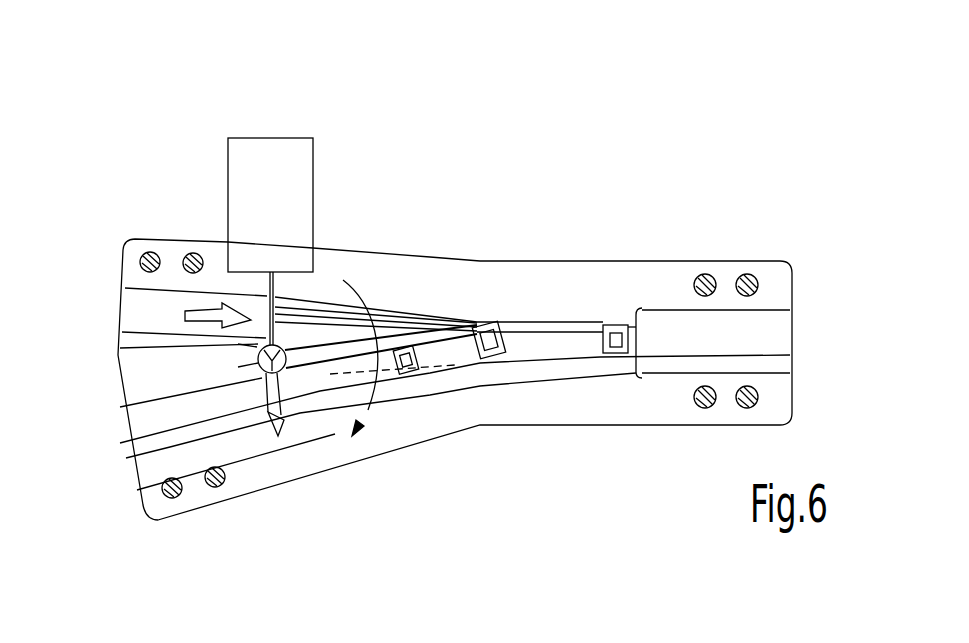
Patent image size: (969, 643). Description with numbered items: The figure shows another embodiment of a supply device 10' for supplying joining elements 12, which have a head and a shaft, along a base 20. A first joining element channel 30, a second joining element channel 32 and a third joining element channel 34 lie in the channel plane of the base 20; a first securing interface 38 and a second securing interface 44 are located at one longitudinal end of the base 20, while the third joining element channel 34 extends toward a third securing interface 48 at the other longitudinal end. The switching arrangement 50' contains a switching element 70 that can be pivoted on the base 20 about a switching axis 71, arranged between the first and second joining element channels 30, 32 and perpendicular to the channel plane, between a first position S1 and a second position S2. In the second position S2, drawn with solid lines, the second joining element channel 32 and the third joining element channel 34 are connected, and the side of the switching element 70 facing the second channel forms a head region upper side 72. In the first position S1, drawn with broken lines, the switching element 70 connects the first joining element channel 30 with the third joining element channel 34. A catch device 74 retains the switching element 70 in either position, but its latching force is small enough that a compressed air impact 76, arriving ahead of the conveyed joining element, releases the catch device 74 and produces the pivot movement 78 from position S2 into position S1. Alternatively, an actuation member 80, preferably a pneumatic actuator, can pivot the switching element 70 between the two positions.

The supply device 10' is at (798, 160).
The joining elements 12 is at (513, 340).
The base 20 is at (603, 257).
The first joining element channel 30 is at (318, 330).
The second joining element channel 32 is at (316, 397).
The third joining element channel 34 is at (592, 355).
The first securing interface 38 is at (147, 310).
The second securing interface 44 is at (172, 423).
The third securing interface 48 is at (758, 336).
The switching arrangement 50' is at (397, 512).
The switching element 70 is at (410, 313).
The switching axis 71 is at (278, 427).
The head region upper side 72 is at (453, 345).
The catch device 74 is at (190, 371).
The compressed air impact 76 is at (211, 305).
The pivot movement 78 is at (378, 300).
The actuation member 80 is at (267, 160).
The first position S1 is at (436, 372).
The second position S2 is at (440, 312).